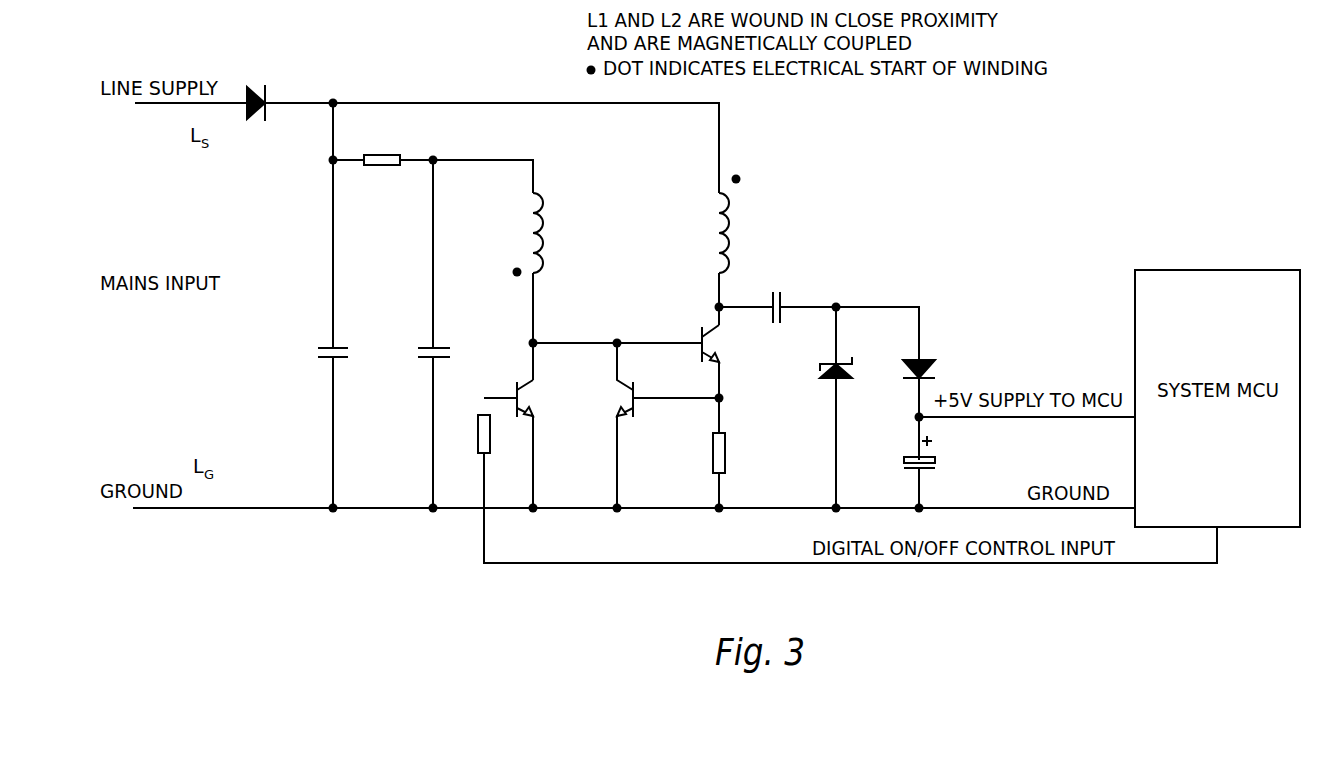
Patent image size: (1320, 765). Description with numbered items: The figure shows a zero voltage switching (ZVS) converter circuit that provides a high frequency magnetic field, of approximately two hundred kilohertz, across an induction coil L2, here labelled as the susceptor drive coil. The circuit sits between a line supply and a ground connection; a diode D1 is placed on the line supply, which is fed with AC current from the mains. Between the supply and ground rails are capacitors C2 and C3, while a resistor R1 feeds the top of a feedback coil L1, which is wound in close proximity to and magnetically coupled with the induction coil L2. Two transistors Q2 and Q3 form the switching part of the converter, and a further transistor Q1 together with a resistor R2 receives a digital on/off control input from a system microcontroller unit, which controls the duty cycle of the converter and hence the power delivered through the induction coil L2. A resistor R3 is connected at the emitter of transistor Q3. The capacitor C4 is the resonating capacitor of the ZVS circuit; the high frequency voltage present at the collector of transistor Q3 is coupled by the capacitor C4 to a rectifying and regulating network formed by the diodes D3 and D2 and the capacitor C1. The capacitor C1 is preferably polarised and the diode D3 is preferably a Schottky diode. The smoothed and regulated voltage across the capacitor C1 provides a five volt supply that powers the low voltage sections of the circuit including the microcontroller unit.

The diode D1 is at (259, 118).
The additional resistor R1 is at (378, 160).
The capacitor C2 is at (349, 325).
The capacitor C3 is at (449, 325).
The feedback coil L1 is at (576, 233).
The induction coil L2 is at (772, 233).
The transistor Q1 is at (511, 433).
The transistor Q2 is at (638, 425).
The transistor Q3 is at (703, 349).
The resistor R2 is at (505, 443).
The resistor R3 is at (698, 463).
The resonating capacitor C4 is at (777, 308).
The second additional diode D3 is at (821, 387).
The first additional diode D2 is at (935, 361).
The additional capacitor C1 is at (949, 461).